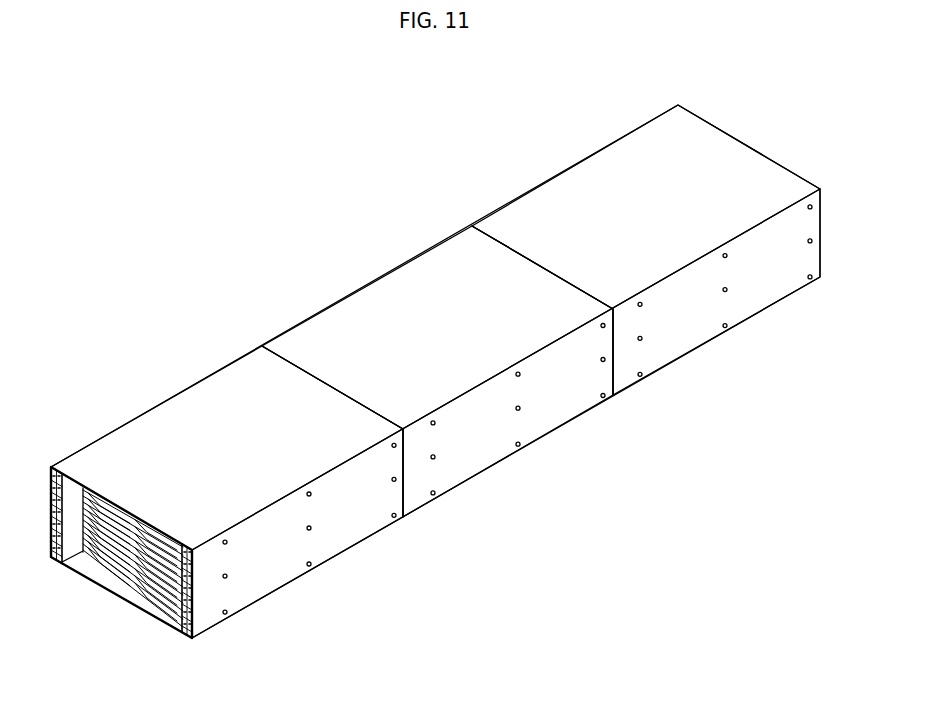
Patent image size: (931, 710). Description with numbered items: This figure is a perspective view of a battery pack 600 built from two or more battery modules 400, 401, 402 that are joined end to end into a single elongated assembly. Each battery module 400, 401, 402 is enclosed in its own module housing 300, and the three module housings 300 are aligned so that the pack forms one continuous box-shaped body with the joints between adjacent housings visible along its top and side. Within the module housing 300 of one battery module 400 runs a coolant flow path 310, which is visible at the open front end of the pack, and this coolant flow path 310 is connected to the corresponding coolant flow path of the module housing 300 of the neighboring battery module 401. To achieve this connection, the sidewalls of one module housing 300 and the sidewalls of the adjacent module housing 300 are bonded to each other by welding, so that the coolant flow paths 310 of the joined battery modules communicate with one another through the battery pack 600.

The battery pack 600 is at (265, 114).
The module housing 300 is at (435, 368).
The battery module 400 is at (227, 476).
The battery module 401 is at (437, 355).
The battery module 402 is at (646, 234).
The coolant flow path 310 is at (185, 631).